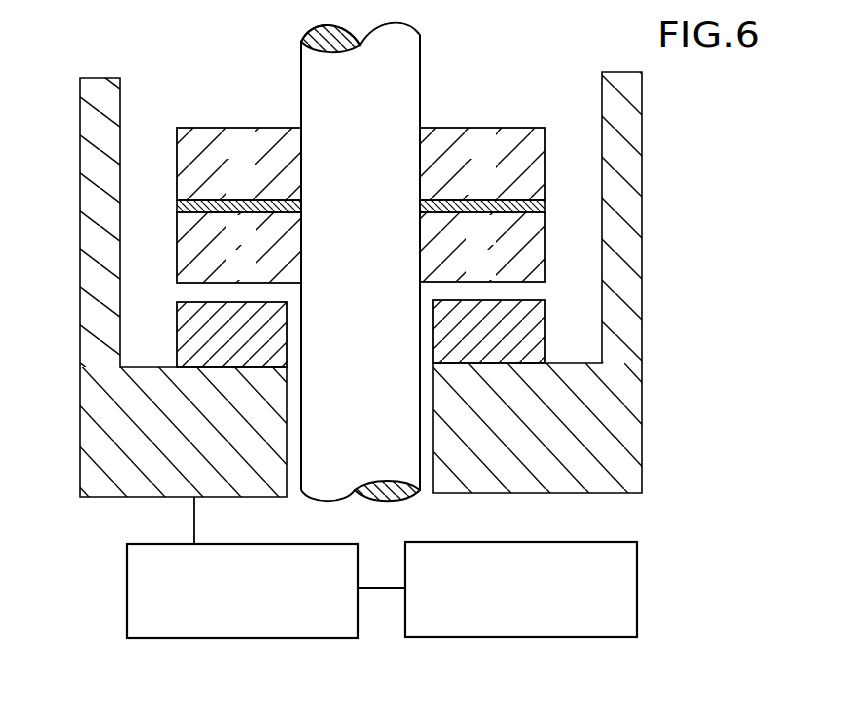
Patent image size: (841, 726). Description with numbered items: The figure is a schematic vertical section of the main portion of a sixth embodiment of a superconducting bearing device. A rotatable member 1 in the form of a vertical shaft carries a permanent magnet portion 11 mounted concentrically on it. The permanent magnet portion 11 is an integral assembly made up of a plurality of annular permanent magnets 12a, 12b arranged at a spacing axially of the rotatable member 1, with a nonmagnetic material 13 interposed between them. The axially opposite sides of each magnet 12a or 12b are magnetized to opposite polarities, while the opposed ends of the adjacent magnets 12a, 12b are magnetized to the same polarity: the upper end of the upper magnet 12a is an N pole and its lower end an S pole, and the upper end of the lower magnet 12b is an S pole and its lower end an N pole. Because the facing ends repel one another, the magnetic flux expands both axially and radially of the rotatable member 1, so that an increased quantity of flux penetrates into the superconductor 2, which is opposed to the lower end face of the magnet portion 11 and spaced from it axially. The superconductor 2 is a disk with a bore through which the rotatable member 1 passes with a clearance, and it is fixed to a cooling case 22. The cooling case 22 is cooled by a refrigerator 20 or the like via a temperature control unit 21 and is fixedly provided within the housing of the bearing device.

The rotatable member 1 is at (318, 75).
The superconductor 2 is at (178, 337).
The permanent magnet portion 11 is at (204, 137).
The upper annular permanent magnet 12a is at (523, 135).
The lower annular permanent magnet 12b is at (540, 242).
The nonmagnetic material 13 is at (545, 206).
The refrigerator 20 is at (637, 588).
The temperature control unit 21 is at (127, 588).
The cooling case 22 is at (573, 493).